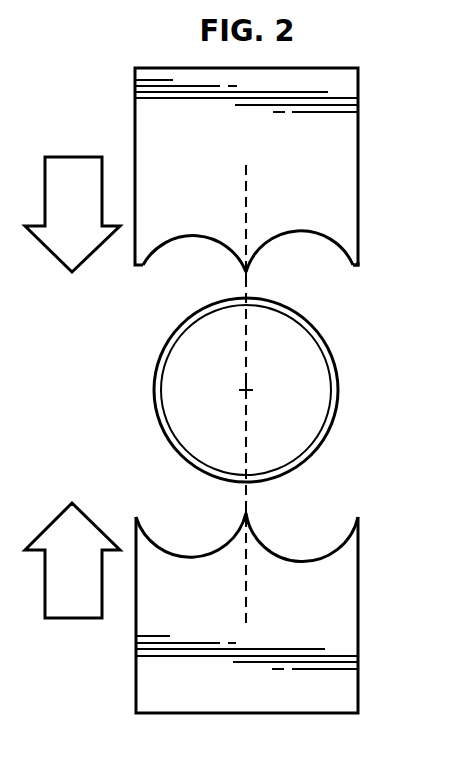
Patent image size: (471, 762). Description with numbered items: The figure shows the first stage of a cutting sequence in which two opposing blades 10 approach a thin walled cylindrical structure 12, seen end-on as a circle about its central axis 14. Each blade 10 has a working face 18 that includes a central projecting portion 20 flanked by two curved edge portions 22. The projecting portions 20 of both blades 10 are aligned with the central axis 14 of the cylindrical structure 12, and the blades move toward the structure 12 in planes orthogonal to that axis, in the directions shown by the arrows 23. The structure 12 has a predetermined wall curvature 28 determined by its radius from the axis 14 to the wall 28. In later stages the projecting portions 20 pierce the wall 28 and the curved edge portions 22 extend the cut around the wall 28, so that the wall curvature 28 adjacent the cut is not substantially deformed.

The blade 10 is at (382, 123).
The cylindrical structure 12 is at (356, 387).
The central axis 14 is at (250, 393).
The working face 18 is at (357, 268).
The projecting portion 20 is at (250, 249).
The curved edge portions 22 is at (194, 233).
The arrows 23 is at (87, 208).
The wall curvature 28 is at (318, 447).